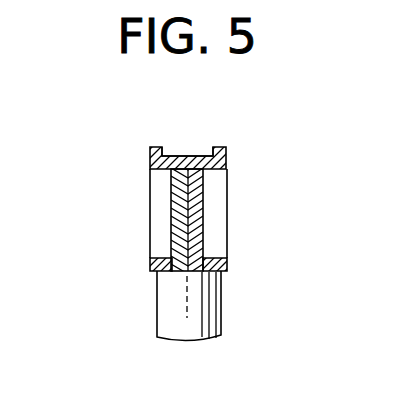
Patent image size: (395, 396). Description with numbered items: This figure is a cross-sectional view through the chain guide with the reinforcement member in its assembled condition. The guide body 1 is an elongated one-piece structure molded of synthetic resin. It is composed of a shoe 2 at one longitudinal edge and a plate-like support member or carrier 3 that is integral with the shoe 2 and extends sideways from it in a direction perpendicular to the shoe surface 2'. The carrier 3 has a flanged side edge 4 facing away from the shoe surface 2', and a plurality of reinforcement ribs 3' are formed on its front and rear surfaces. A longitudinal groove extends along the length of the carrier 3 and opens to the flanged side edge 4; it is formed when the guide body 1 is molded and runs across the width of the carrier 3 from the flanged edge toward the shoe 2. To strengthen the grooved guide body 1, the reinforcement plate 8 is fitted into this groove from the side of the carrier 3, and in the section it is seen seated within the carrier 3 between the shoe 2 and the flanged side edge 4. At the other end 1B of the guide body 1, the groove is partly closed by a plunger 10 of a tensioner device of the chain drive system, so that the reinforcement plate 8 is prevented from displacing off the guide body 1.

The guide body 1 is at (212, 135).
The other end of the guide body 1B is at (146, 285).
The shoe 2 is at (160, 159).
The shoe surface 2' is at (152, 122).
The carrier 3 is at (234, 215).
The reinforcement ribs 3' is at (228, 213).
The flanged side edge 4 is at (154, 262).
The reinforcement plate 8 is at (188, 235).
The plunger 10 is at (208, 308).